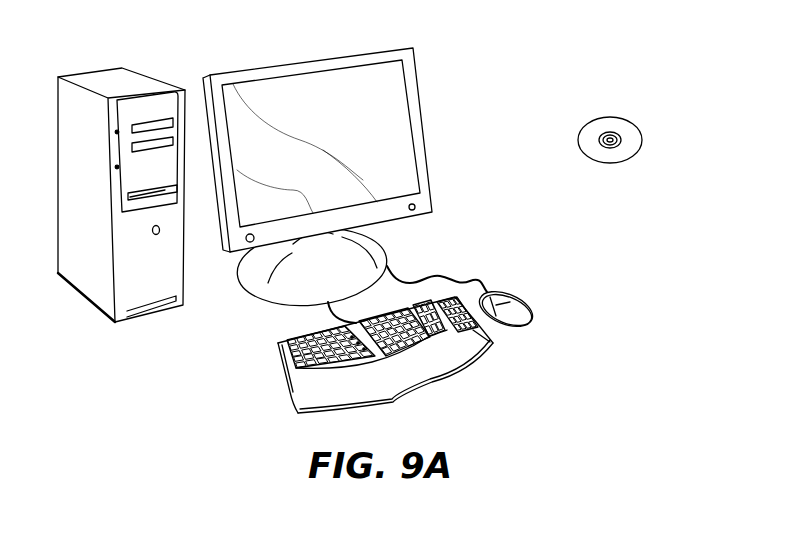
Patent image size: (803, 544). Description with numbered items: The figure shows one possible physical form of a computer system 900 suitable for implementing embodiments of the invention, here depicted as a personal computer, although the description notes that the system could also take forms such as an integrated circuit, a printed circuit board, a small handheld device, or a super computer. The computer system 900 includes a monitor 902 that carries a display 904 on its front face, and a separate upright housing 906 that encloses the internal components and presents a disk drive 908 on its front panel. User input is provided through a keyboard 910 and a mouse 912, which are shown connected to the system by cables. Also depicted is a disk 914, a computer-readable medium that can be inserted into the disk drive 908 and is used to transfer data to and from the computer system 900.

The computer system 900 is at (540, 31).
The display monitor 902 is at (427, 148).
The display screen 904 is at (383, 88).
The computer housing / tower 906 is at (108, 78).
The media drive 908 is at (168, 190).
The keyboard 910 is at (290, 385).
The mouse 912 is at (527, 304).
The removable storage disc 914 is at (625, 118).